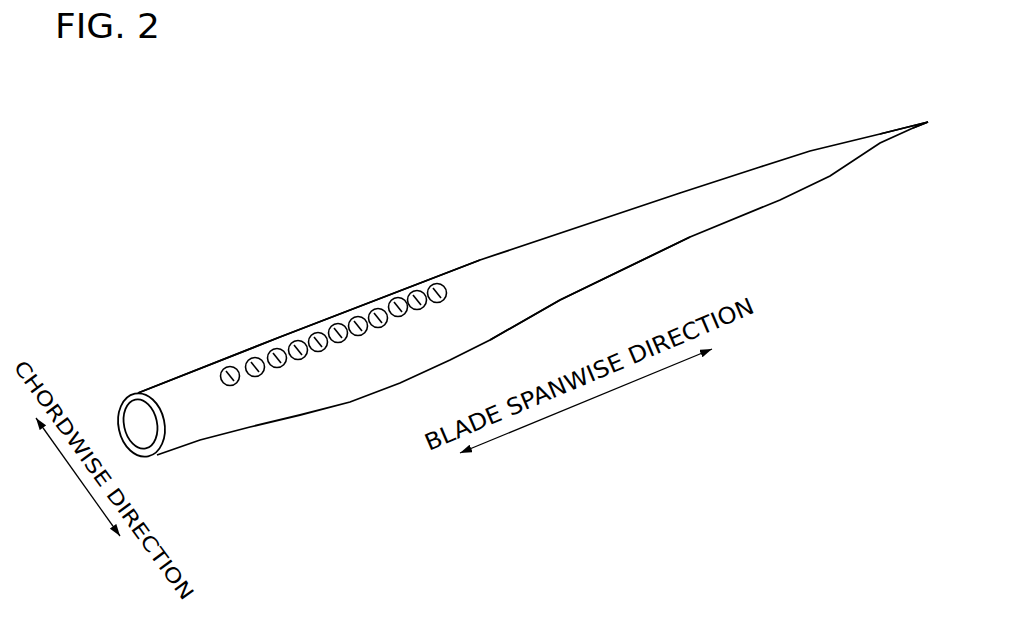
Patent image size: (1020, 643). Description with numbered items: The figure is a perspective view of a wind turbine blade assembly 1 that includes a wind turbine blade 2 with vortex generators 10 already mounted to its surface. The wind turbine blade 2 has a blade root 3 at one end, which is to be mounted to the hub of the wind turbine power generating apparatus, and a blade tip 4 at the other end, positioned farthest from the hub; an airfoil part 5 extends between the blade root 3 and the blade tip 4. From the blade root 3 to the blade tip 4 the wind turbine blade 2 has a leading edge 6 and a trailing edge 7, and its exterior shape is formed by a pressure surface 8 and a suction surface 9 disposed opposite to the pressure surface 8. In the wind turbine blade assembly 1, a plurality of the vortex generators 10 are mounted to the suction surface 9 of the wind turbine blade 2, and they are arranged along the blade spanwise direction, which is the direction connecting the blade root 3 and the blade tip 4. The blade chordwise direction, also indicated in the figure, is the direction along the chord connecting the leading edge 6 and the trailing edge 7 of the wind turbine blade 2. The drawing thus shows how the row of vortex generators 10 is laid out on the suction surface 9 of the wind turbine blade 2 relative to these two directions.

The wind turbine blade assembly 1 is at (280, 210).
The wind turbine blade 2 is at (561, 228).
The blade root 3 is at (125, 396).
The blade tip 4 is at (928, 122).
The airfoil part 5 is at (343, 311).
The leading edge 6 is at (498, 253).
The trailing edge 7 is at (555, 291).
The pressure surface 8 is at (587, 260).
The suction surface 9 is at (525, 290).
The vortex generator 10 is at (223, 368).